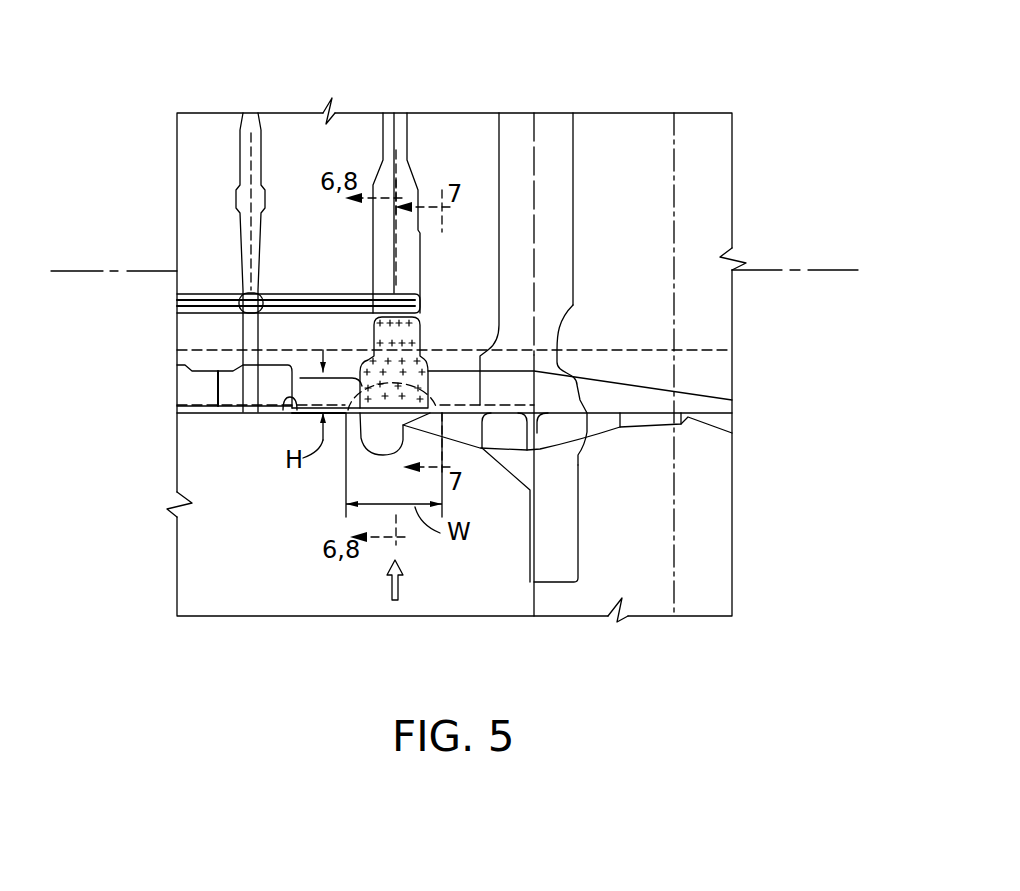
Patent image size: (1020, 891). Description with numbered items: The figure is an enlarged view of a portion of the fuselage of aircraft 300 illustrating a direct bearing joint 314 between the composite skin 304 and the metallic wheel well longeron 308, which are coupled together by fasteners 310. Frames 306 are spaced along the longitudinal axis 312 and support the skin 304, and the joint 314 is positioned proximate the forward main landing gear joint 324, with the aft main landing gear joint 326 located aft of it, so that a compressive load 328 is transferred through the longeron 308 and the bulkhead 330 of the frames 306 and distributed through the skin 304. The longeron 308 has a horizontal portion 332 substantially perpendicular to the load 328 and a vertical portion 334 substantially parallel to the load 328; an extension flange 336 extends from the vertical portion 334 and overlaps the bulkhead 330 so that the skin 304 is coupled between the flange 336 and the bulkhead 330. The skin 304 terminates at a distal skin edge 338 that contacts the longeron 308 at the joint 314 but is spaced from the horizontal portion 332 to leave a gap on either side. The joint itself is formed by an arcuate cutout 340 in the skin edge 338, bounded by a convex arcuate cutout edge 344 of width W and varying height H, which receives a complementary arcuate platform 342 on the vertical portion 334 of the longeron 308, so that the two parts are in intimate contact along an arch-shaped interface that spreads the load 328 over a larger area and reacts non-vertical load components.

The aircraft 300 is at (126, 126).
The composite skin 304 is at (355, 362).
The frames 306 is at (255, 132).
The wheel well longeron 308 is at (600, 377).
The fasteners 310 is at (368, 348).
The longitudinal axis 312 is at (140, 271).
The direct bearing joint 314 is at (366, 366).
The forward main landing gear joint 324 is at (388, 441).
The aft main landing gear joint 326 is at (537, 433).
The load 328 is at (405, 580).
The bulkhead 330 is at (402, 133).
The horizontal portion 332 is at (310, 415).
The vertical portion 334 is at (560, 327).
The extension flange 336 is at (420, 334).
The distal skin edge 338 is at (290, 410).
The arcuate cutout 340 is at (433, 367).
The platform 342 is at (392, 405).
The arcuate cutout edge 344 is at (440, 388).